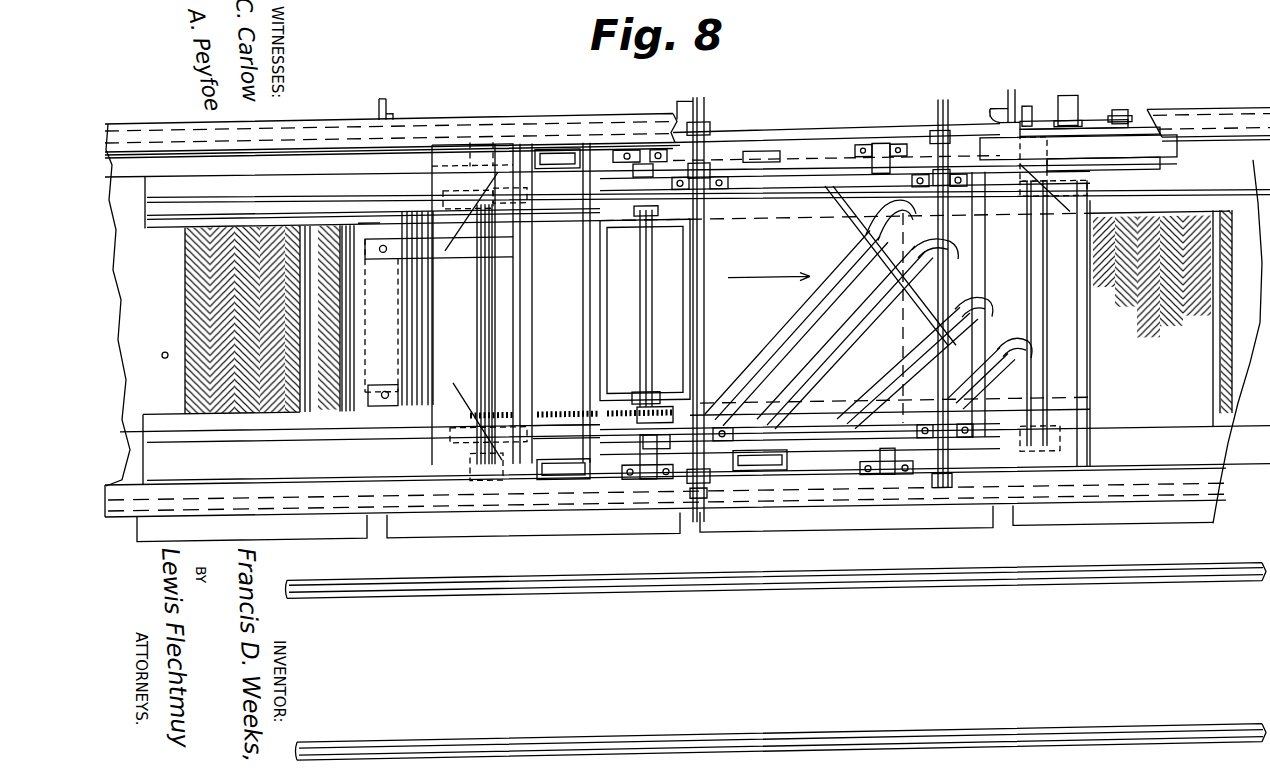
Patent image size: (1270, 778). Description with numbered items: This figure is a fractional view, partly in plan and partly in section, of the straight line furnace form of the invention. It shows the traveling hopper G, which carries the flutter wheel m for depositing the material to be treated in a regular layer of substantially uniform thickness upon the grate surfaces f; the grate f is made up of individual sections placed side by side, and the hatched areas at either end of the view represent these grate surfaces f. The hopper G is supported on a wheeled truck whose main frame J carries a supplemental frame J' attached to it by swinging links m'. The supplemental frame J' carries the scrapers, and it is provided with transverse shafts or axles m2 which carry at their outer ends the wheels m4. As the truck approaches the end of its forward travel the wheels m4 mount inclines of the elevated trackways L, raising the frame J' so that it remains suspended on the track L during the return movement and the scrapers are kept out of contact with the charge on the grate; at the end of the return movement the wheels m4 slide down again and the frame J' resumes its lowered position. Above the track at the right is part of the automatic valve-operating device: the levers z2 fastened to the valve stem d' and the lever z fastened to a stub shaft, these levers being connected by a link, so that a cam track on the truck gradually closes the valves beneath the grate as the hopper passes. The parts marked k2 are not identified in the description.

The elevated trackway L is at (315, 136).
The main frame of the truck J is at (759, 301).
The supplemental frame J' is at (888, 304).
The traveling hopper G is at (704, 316).
The flutter wheel m is at (580, 322).
The swinging links m' is at (760, 311).
The transverse shafts or axles m2 is at (712, 268).
The wheels m4 is at (708, 130).
The inclined brace arms k2 is at (833, 303).
The lever z is at (1038, 133).
The levers z2 is at (1080, 136).
The valve stem d' is at (1120, 103).
The grate surfaces f is at (195, 325).